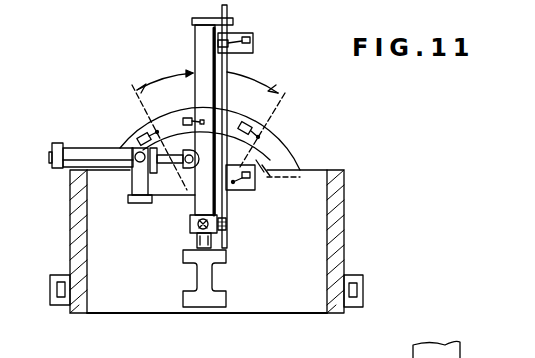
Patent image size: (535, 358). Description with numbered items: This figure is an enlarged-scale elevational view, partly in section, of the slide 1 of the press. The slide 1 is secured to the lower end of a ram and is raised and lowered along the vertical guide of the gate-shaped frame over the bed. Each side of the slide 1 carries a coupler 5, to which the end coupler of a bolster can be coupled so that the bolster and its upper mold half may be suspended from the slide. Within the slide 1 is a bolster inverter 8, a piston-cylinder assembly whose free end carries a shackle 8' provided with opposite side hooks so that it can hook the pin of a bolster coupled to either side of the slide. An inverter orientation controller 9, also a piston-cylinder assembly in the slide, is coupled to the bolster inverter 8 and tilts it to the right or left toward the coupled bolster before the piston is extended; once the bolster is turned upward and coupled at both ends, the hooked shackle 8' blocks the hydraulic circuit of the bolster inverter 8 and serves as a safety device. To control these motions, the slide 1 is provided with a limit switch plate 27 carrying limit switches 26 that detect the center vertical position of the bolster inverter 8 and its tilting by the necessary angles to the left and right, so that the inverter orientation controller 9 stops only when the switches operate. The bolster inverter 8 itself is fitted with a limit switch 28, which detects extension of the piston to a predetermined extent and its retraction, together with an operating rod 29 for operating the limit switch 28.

The slide 1 is at (338, 185).
The coupler 5 is at (60, 277).
The bolster inverter 8 is at (207, 126).
The shackle 8' is at (204, 303).
The inverter orientation controller 9 is at (87, 155).
The limit switches 26 is at (186, 117).
The limit switch plate 27 is at (270, 148).
The limit switch 28 is at (248, 34).
The operating rod 29 is at (235, 50).